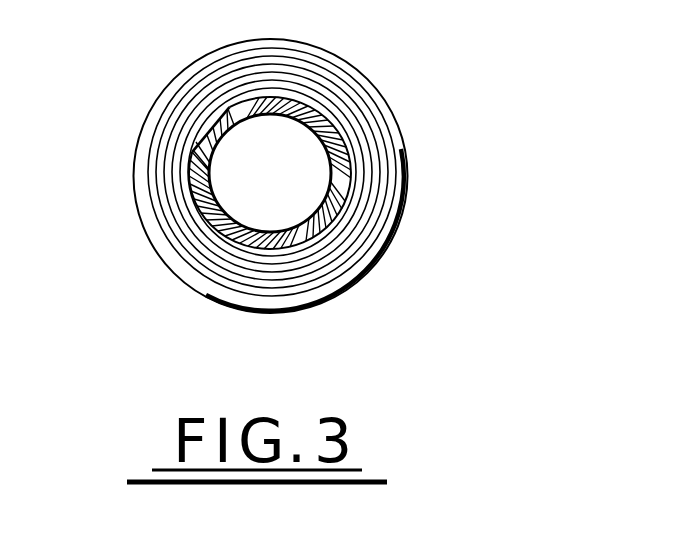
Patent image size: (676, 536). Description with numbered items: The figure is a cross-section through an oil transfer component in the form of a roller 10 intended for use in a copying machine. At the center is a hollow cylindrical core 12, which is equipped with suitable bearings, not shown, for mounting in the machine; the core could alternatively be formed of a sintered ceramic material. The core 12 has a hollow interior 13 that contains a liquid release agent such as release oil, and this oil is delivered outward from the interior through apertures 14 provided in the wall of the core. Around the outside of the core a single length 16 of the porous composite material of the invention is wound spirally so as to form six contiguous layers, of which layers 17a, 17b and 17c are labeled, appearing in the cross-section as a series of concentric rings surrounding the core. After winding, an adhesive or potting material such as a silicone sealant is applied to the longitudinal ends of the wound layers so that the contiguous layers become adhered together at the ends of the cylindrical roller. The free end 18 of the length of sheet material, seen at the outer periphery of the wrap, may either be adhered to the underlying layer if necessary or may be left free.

The roller 10 is at (283, 194).
The hollow cylindrical core 12 is at (348, 161).
The hollow interior 13 is at (287, 182).
The apertures 14 is at (345, 182).
The single length of porous composite material 16 is at (216, 307).
The first contiguous layer 17a is at (172, 73).
The second contiguous layer 17b is at (158, 108).
The third contiguous layer 17c is at (153, 163).
The free end of the length of sheet material 18 is at (212, 292).